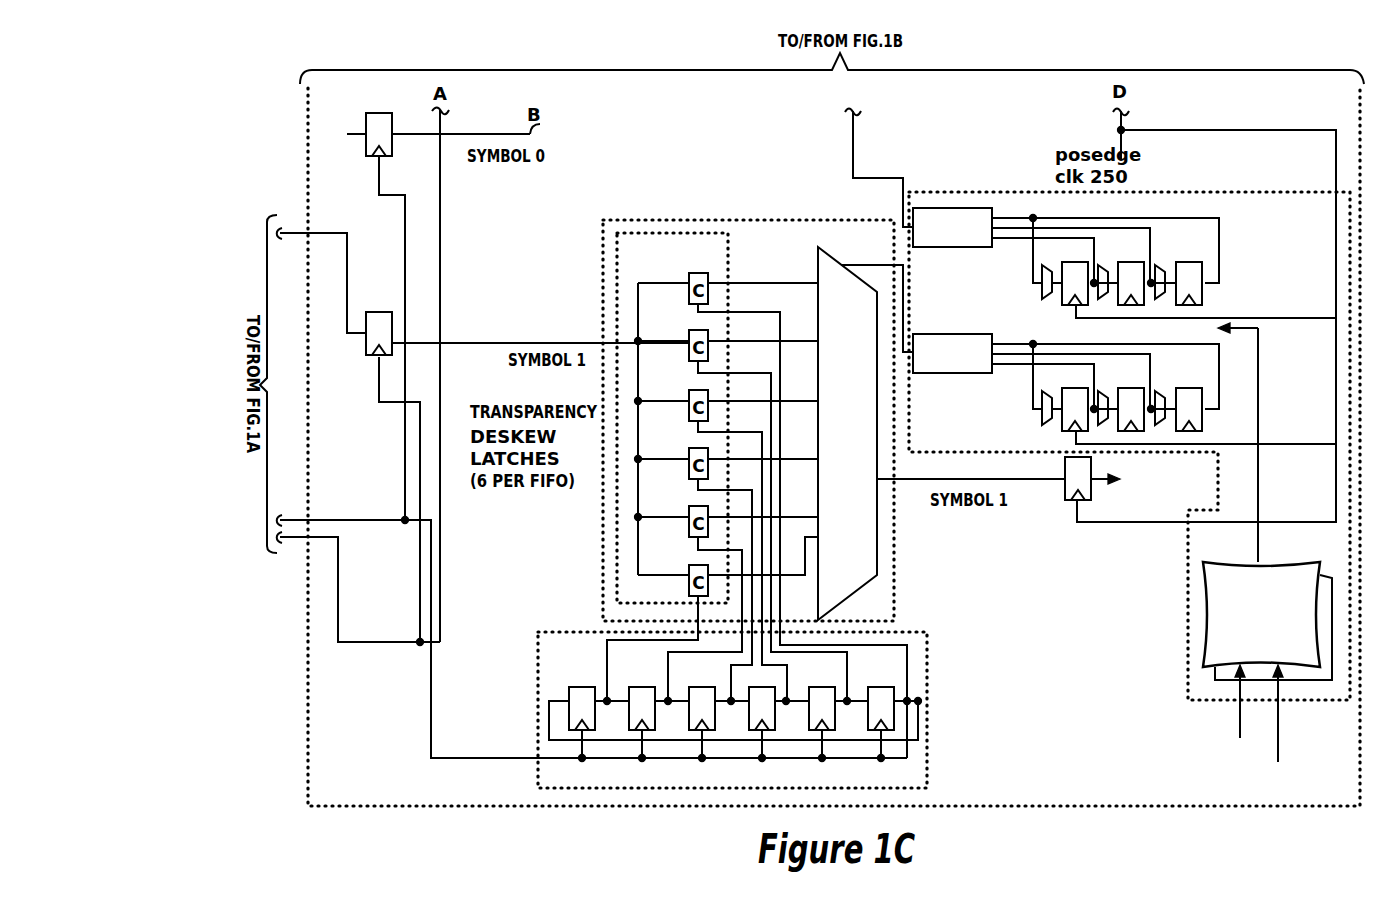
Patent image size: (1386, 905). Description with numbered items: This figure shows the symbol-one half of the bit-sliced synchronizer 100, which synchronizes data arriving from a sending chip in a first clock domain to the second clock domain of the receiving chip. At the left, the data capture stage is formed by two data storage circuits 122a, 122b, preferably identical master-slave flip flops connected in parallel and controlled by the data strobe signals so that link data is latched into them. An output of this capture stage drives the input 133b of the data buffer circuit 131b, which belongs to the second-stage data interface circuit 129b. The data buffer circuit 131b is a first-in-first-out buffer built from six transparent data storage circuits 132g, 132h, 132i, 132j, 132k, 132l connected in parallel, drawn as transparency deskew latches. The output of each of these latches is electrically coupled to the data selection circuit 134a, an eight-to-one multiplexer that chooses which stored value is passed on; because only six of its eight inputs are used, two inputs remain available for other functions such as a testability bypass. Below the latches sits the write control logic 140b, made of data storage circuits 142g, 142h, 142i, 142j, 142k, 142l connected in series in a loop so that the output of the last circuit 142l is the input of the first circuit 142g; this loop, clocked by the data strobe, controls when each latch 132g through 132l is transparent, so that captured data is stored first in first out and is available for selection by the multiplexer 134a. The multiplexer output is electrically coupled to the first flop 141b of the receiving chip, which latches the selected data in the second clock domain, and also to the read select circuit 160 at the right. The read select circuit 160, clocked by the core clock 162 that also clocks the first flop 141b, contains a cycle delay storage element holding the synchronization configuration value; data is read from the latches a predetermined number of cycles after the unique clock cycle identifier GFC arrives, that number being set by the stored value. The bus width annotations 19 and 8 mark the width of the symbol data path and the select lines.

The bit-sliced synchronizer 100 is at (305, 130).
The data storage circuit 122a is at (371, 113).
The data storage circuit 122b is at (366, 349).
The data interface circuit 129b is at (600, 227).
The data buffer circuit 131b is at (705, 222).
The data storage circuit 132g is at (694, 273).
The data storage circuit 132h is at (694, 330).
The data storage circuit 132i is at (694, 390).
The data storage circuit 132j is at (694, 448).
The data storage circuit 132k is at (694, 506).
The data storage circuit 132l is at (694, 565).
The input of the data buffer circuit 133b is at (530, 343).
The data selection circuit 134a is at (871, 440).
The write control logic 140b is at (590, 628).
The first flop 141b is at (1063, 462).
The data storage circuit 142g is at (894, 668).
The data storage circuit 142h is at (830, 687).
The data storage circuit 142i is at (771, 683).
The data storage circuit 142j is at (709, 687).
The data storage circuit 142k is at (646, 687).
The data storage circuit 142l is at (579, 687).
The read select circuit 160 is at (1272, 177).
The core clock 162 is at (1121, 130).
The 19-bit symbol bus 19 is at (484, 141).
The 8-bit select bus 8 is at (873, 186).